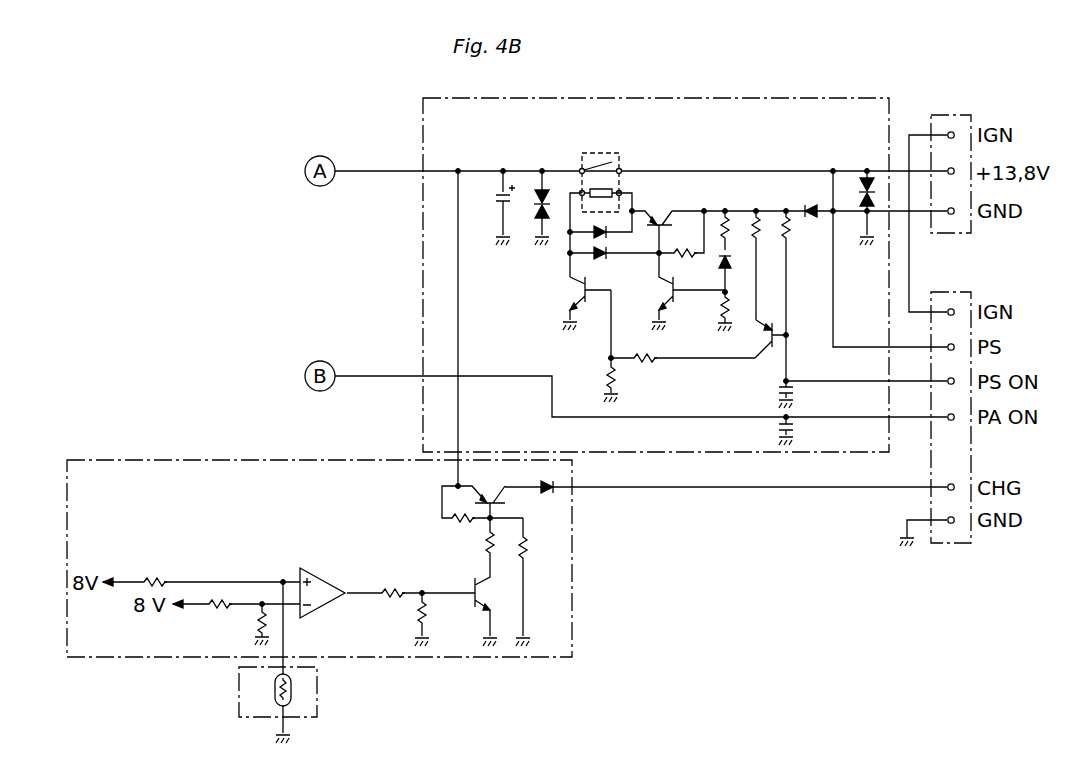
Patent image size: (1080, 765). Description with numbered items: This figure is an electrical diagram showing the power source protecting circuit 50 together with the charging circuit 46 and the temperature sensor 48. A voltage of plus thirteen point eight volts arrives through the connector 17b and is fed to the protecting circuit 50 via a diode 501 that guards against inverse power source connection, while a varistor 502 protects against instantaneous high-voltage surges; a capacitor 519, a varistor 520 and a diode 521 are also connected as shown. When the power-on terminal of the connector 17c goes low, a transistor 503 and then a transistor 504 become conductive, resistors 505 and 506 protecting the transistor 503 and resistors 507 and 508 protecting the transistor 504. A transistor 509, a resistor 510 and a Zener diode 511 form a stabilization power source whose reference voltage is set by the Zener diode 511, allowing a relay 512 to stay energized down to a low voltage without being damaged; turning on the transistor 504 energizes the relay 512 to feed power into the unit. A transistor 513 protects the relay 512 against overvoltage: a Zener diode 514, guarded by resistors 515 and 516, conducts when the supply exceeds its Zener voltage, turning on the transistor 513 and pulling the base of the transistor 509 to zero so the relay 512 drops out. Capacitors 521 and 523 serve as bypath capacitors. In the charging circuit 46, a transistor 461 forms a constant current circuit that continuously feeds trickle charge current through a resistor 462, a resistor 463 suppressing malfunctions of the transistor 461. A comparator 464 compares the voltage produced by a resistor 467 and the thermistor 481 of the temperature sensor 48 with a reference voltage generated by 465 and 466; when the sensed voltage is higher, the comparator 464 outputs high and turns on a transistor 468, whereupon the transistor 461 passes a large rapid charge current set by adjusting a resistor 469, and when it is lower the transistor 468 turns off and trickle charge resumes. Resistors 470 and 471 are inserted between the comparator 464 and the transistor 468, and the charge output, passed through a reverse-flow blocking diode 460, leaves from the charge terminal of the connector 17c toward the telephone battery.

The power source protecting circuit 50 is at (755, 98).
The charging circuit 46 is at (188, 460).
The temperature sensor 48 is at (320, 690).
The connector 17b is at (942, 115).
The connector 17c is at (958, 292).
The capacitor 519 is at (495, 197).
The varistor 520 is at (552, 200).
The relay 512 is at (612, 150).
The diode / bypath capacitor 521 is at (594, 235).
The Zener diode 511 is at (602, 258).
The transistor 509 is at (648, 218).
The resistor 510 is at (678, 248).
The transistor 504 is at (575, 278).
The transistor 513 is at (683, 306).
The resistor 516 is at (736, 238).
The Zener diode 514 is at (717, 266).
The resistor 515 is at (719, 308).
The resistor 505 is at (763, 240).
The resistor 506 is at (812, 240).
The diode 501 is at (812, 202).
The varistor 502 is at (862, 186).
The transistor 503 is at (772, 350).
The resistor 508 is at (648, 362).
The resistor 507 is at (618, 386).
The bypath capacitor 523 is at (797, 430).
The transistor 461 is at (480, 498).
The resistor 463 is at (455, 521).
The resistor / diode 469 is at (485, 545).
The resistor 462 is at (530, 547).
The diode 460 is at (548, 494).
The transistor 468 is at (480, 612).
The resistor 470 is at (385, 600).
The resistor 471 is at (415, 616).
The comparator 464 is at (325, 576).
The resistor 467 is at (152, 576).
The resistor 465 is at (219, 598).
The resistor 466 is at (255, 622).
The thermistor 481 is at (272, 690).